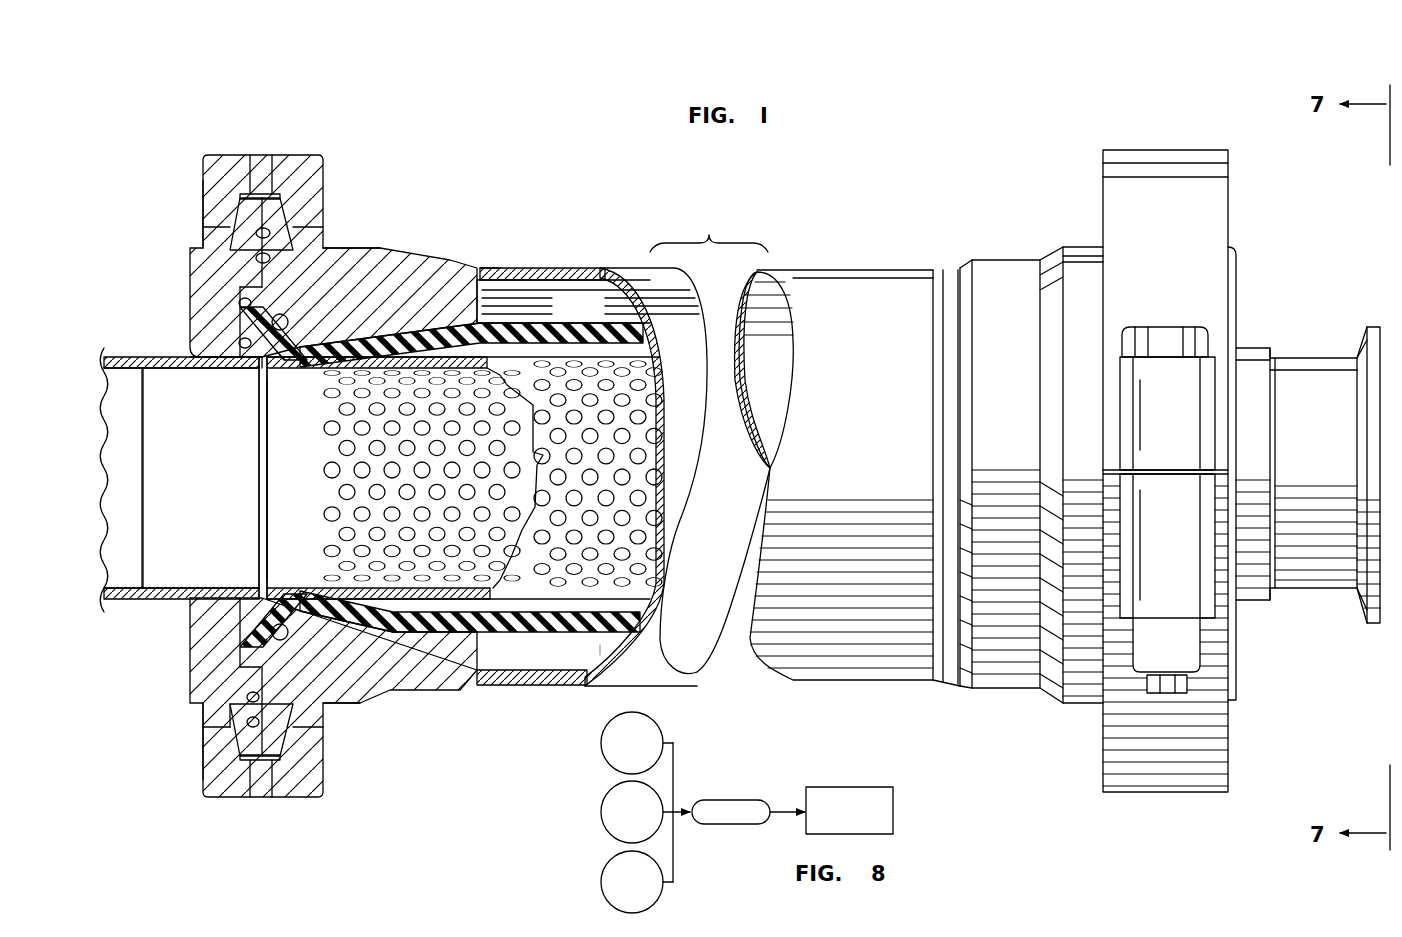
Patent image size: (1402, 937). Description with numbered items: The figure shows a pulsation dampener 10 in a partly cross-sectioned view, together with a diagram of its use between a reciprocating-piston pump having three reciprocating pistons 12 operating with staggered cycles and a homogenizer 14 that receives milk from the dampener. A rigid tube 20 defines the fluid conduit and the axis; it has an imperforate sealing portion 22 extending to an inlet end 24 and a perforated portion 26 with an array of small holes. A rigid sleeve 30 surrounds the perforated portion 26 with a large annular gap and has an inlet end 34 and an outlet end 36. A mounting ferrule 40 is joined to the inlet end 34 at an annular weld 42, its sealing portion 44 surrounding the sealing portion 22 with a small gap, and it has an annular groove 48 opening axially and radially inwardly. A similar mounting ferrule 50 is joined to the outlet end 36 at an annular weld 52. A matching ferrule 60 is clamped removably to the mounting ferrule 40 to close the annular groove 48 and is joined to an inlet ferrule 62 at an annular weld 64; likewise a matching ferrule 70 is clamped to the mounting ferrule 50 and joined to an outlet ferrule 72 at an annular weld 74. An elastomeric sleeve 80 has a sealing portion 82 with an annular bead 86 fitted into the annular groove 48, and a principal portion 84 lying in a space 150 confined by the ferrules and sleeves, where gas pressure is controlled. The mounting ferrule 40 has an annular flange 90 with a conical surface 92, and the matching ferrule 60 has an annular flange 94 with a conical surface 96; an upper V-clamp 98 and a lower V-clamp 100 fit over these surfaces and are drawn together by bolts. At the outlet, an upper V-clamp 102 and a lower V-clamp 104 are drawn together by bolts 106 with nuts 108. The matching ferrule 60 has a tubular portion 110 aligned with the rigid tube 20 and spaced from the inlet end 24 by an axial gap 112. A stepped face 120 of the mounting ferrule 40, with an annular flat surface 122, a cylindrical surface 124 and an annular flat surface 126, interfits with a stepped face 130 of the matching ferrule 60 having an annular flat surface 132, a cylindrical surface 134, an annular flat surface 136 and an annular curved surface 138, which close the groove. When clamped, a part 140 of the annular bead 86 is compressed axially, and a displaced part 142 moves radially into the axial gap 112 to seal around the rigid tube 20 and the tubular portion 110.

In FIG. 1, the pulsation dampener 10 is at (893, 185).
In FIG. 8, the pulsation dampener 10 is at (740, 800).
In FIG. 8, the reciprocating pistons 12 is at (605, 762).
In FIG. 8, the homogenizer 14 is at (855, 787).
In FIG. 1, the rigid tube 20 is at (505, 345).
In FIG. 1, the sealing portion 22 is at (278, 468).
In FIG. 1, the inlet end 24 is at (270, 457).
In FIG. 1, the perforated portion 26 is at (615, 360).
In FIG. 1, the rigid sleeve 30 is at (585, 268).
In FIG. 1, the inlet end 34 is at (510, 275).
In FIG. 1, the outlet end 36 is at (925, 270).
In FIG. 1, the mounting ferrule 40 is at (355, 262).
In FIG. 1, the annular weld 42 is at (503, 270).
In FIG. 1, the sealing portion 44 is at (315, 355).
In FIG. 1, the annular groove 48 is at (280, 328).
In FIG. 1, the mounting ferrule 50 is at (1088, 255).
In FIG. 1, the annular weld 52 is at (935, 655).
In FIG. 1, the matching ferrule 60 is at (196, 272).
In FIG. 1, the inlet ferrule 62 is at (115, 357).
In FIG. 1, the annular weld 64 is at (143, 357).
In FIG. 1, the matching ferrule 70 is at (1235, 285).
In FIG. 1, the outlet ferrule 72 is at (1315, 355).
In FIG. 1, the annular weld 74 is at (1287, 575).
In FIG. 1, the elastomeric sleeve 80 is at (597, 632).
In FIG. 1, the sealing portion 82 is at (283, 370).
In FIG. 1, the principal portion 84 is at (525, 650).
In FIG. 1, the annular bead 86 is at (258, 362).
In FIG. 1, the annular flange 90 is at (285, 198).
In FIG. 1, the conical surface 92 is at (300, 217).
In FIG. 1, the annular flange 94 is at (258, 198).
In FIG. 1, the conical surface 96 is at (212, 195).
In FIG. 1, the upper V-clamp 98 is at (318, 178).
In FIG. 1, the lower V-clamp 100 is at (305, 792).
In FIG. 1, the upper V-clamp 102 is at (1210, 193).
In FIG. 1, the lower V-clamp 104 is at (1215, 745).
In FIG. 1, the bolts 106 is at (1165, 332).
In FIG. 1, the nuts 108 is at (1195, 655).
In FIG. 1, the tubular portion 110 is at (257, 590).
In FIG. 1, the axial gap 112 is at (292, 487).
In FIG. 1, the stepped face 120 is at (290, 728).
In FIG. 1, the annular flat surface 122 is at (330, 705).
In FIG. 1, the cylindrical surface 124 is at (245, 680).
In FIG. 1, the annular flat surface 126 is at (240, 640).
In FIG. 1, the stepped face 130 is at (262, 228).
In FIG. 1, the annular flat surface 132 is at (258, 253).
In FIG. 1, the cylindrical surface 134 is at (238, 292).
In FIG. 1, the annular flat surface 136 is at (243, 305).
In FIG. 1, the annular curved surface 138 is at (215, 368).
In FIG. 1, the part of the annular bead 140 is at (240, 337).
In FIG. 1, the displaced part 142 is at (235, 400).
In FIG. 1, the space 150 is at (600, 314).